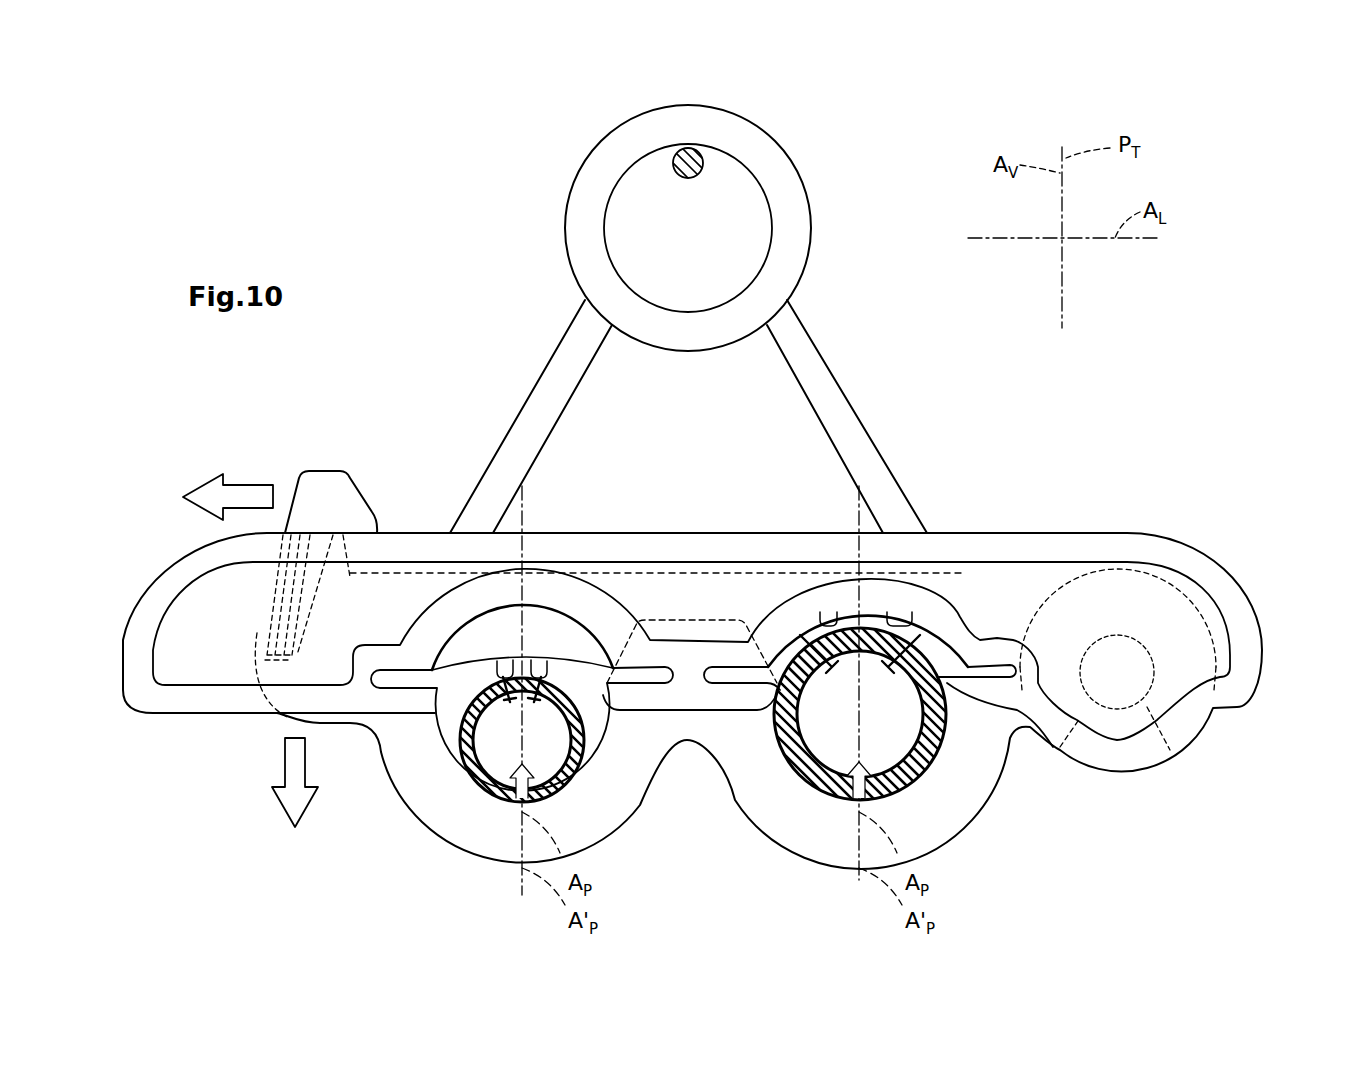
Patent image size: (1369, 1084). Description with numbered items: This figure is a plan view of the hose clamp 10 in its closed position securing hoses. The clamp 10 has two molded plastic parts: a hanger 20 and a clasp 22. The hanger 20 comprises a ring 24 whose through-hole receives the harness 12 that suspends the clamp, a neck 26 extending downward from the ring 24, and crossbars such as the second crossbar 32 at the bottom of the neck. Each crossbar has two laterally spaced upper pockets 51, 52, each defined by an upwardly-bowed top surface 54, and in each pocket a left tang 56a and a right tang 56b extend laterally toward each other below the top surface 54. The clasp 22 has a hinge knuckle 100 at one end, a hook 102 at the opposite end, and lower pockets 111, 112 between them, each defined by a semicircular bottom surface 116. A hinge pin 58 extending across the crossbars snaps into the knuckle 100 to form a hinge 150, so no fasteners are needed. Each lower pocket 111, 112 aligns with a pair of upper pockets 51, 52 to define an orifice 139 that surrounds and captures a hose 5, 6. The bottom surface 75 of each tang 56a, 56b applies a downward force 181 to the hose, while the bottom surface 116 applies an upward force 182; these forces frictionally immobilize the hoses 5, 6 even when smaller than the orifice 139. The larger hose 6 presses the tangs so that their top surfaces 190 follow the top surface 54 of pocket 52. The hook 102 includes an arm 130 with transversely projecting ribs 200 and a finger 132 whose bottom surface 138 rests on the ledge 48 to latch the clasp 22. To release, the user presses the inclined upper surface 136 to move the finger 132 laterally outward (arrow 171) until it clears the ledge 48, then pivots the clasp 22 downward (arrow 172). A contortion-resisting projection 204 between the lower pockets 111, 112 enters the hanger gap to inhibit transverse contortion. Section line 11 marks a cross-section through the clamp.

The hose clamp 10 is at (689, 315).
The harness 12 is at (710, 158).
The ring 24 is at (721, 224).
The hanger 20 is at (709, 315).
The neck 26 is at (876, 432).
The section line 11 is at (522, 486).
The clasp 22 is at (701, 642).
The flexible line 5 is at (577, 760).
The flexible line 6 is at (805, 758).
The bottom surface of tang 75 is at (575, 648).
The upper pocket 51 is at (537, 608).
The upper pocket 52 is at (840, 602).
The contortion-resisting projection 204 is at (685, 620).
The orifice 139 is at (522, 751).
The left tang 56a is at (505, 662).
The right tang 56b is at (537, 660).
The downward force 181 is at (900, 680).
The upward force 182 is at (858, 803).
The lower pocket 111 is at (450, 768).
The lower pocket 112 is at (889, 800).
The bottom surface 116 is at (915, 762).
The top surface of tang 190 is at (945, 640).
The top surface 54 is at (905, 615).
The hinge knuckle 100 is at (1113, 600).
The hinge 150 is at (1194, 618).
The hinge pin 58 is at (1125, 662).
The second crossbar 32 is at (1262, 625).
The inclined upper surface 136 is at (358, 478).
The ledge 48 is at (355, 532).
The finger 132 is at (378, 523).
The bottom surface 138 is at (357, 540).
The rib 200 is at (283, 553).
The arm 130 is at (267, 592).
The hook 102 is at (260, 636).
The arrow 171 is at (235, 485).
The arrow 172 is at (285, 767).